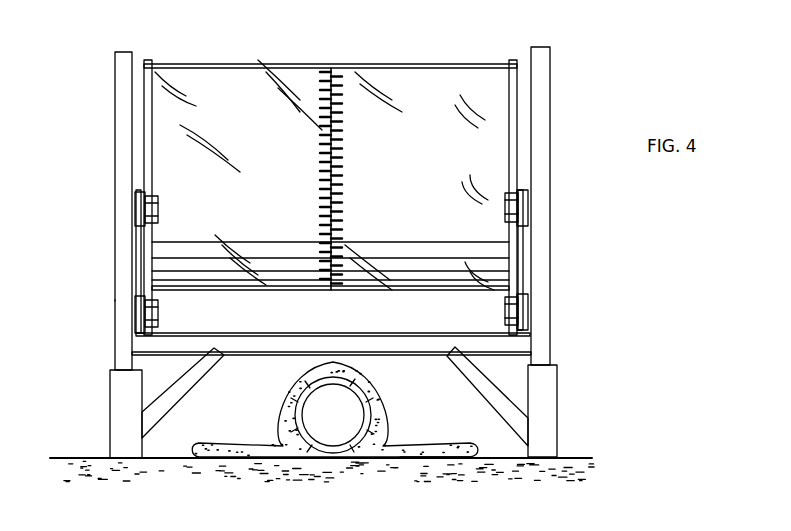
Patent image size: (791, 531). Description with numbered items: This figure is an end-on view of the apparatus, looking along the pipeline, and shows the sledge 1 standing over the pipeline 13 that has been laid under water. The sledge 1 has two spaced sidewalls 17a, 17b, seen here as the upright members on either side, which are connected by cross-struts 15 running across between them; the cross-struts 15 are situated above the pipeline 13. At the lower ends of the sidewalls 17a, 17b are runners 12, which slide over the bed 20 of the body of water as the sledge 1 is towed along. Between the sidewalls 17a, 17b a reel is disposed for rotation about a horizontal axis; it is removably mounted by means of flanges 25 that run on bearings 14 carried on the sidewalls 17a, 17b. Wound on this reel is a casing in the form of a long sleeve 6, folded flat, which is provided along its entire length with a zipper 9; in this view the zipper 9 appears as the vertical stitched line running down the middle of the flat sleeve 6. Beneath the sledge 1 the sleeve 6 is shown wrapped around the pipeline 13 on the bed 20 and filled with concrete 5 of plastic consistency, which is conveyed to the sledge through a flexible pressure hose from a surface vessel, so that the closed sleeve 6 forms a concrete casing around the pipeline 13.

The sledge 1 is at (110, 119).
The sidewall 17b is at (121, 53).
The sidewall 17a is at (538, 57).
The runner 12 is at (127, 410).
The flange 25 is at (148, 253).
The bearing 14 is at (138, 197).
The cross-strut 15 is at (318, 344).
The sleeve 6 is at (428, 85).
The zipper 9 is at (322, 113).
The pipeline 13 is at (330, 459).
The bed 20 is at (230, 463).
The concrete 5 is at (443, 459).